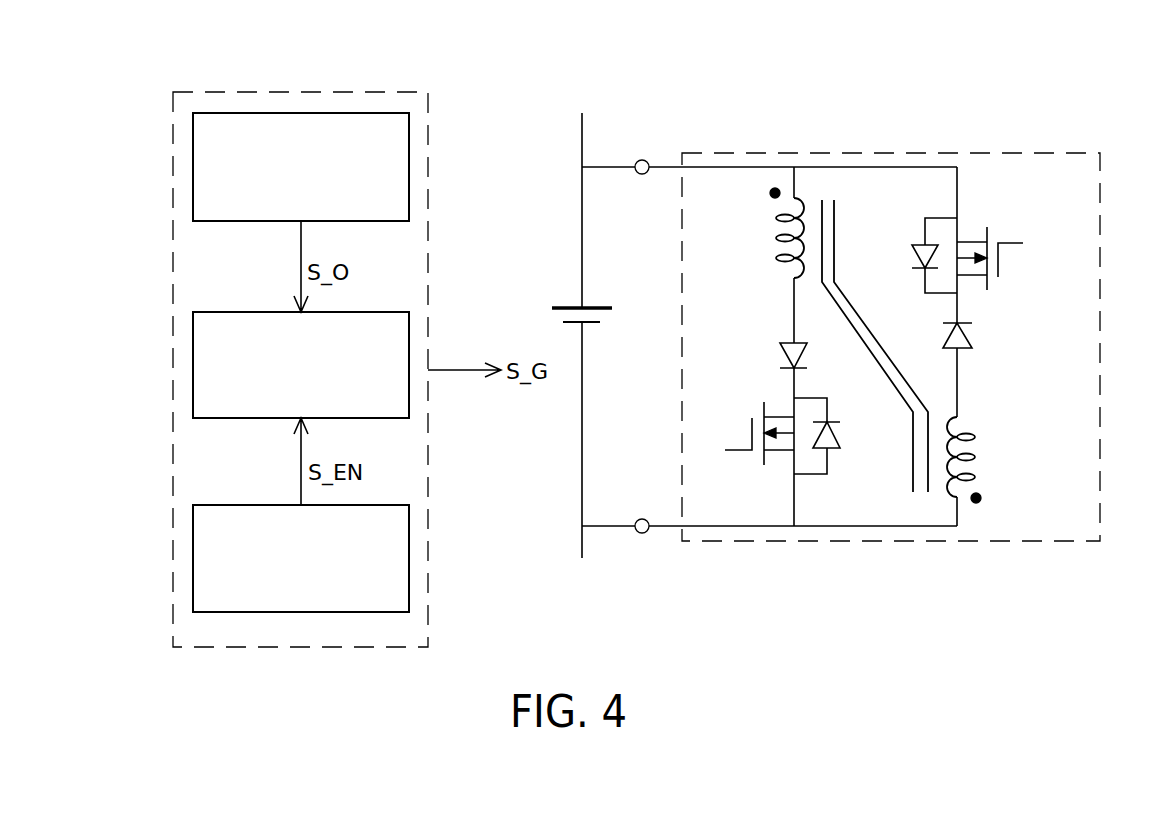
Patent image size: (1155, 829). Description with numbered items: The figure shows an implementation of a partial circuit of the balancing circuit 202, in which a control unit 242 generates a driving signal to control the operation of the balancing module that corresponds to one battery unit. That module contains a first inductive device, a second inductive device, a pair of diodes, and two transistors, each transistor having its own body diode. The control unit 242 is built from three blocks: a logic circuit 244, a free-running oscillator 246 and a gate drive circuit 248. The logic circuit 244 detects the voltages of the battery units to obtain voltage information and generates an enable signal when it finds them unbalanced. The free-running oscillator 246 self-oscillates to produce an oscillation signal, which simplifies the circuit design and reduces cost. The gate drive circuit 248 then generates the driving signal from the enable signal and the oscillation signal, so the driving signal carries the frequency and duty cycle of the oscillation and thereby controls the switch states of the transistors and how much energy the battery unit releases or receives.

The balancing circuit 202 is at (997, 80).
The control unit 242 is at (187, 91).
The logic circuit 244 is at (193, 555).
The free-running oscillator 246 is at (193, 168).
The gate drive circuit 248 is at (193, 364).